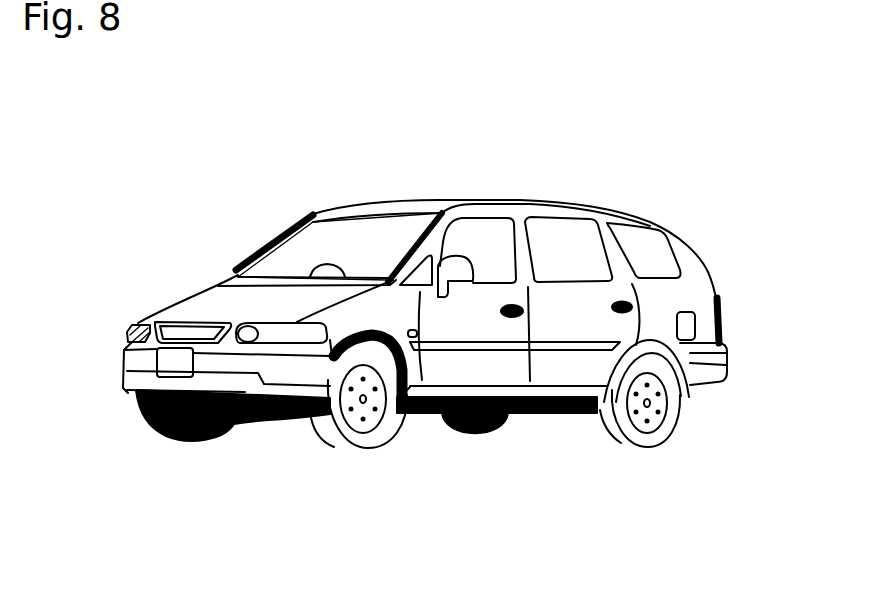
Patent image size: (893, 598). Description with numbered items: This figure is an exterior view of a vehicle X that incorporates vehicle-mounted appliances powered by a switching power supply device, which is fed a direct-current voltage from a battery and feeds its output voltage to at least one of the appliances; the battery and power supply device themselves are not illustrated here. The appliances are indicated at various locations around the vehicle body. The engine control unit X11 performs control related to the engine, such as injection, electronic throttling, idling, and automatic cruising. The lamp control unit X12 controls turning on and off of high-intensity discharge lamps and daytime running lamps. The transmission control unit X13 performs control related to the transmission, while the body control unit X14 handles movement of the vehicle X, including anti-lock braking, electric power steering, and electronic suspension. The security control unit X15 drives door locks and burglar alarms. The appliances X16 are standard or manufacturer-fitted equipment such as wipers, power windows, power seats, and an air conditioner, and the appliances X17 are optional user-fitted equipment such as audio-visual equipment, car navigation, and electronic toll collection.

The vehicle X is at (104, 158).
The engine control unit X11 is at (216, 303).
The lamp control unit X12 is at (139, 329).
The transmission control unit X13 is at (308, 413).
The body control unit X14 is at (592, 415).
The security control unit X15 is at (643, 310).
The standard or manufacturer-fitted electronic appliances X16 is at (575, 232).
The user-fitted electronic appliances X17 is at (358, 267).